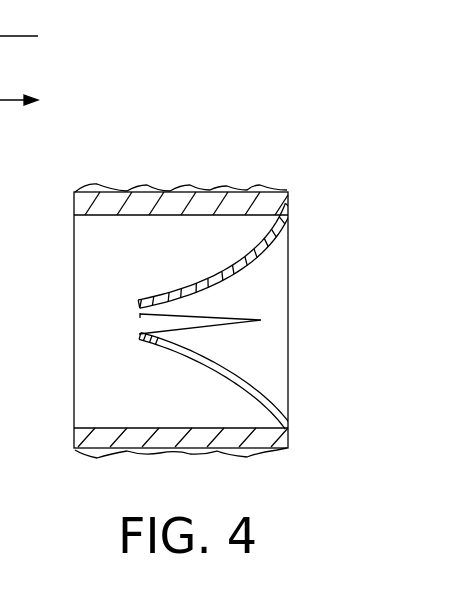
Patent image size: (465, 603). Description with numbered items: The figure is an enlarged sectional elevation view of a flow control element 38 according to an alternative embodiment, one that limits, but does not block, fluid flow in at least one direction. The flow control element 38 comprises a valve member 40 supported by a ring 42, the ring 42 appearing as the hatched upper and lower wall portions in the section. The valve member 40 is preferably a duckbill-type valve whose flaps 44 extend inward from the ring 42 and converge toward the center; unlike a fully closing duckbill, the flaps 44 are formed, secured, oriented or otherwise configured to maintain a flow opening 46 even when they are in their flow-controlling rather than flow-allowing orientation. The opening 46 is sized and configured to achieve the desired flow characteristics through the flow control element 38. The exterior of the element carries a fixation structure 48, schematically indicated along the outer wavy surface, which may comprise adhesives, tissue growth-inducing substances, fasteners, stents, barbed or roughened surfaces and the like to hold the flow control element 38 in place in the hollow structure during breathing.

The flow control element 38 is at (262, 121).
The valve member 40 is at (254, 270).
The ring 42 is at (258, 450).
The flaps 44 is at (245, 370).
The flow opening 46 is at (143, 318).
The fixation structure 48 is at (263, 187).